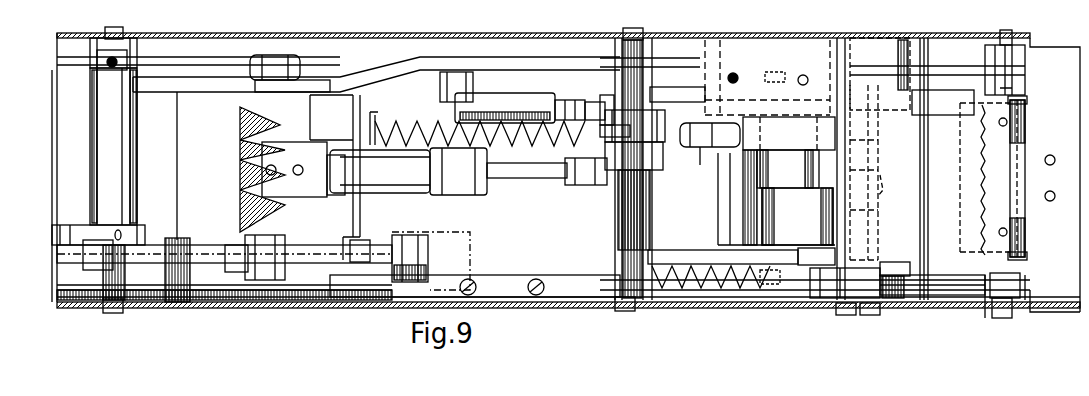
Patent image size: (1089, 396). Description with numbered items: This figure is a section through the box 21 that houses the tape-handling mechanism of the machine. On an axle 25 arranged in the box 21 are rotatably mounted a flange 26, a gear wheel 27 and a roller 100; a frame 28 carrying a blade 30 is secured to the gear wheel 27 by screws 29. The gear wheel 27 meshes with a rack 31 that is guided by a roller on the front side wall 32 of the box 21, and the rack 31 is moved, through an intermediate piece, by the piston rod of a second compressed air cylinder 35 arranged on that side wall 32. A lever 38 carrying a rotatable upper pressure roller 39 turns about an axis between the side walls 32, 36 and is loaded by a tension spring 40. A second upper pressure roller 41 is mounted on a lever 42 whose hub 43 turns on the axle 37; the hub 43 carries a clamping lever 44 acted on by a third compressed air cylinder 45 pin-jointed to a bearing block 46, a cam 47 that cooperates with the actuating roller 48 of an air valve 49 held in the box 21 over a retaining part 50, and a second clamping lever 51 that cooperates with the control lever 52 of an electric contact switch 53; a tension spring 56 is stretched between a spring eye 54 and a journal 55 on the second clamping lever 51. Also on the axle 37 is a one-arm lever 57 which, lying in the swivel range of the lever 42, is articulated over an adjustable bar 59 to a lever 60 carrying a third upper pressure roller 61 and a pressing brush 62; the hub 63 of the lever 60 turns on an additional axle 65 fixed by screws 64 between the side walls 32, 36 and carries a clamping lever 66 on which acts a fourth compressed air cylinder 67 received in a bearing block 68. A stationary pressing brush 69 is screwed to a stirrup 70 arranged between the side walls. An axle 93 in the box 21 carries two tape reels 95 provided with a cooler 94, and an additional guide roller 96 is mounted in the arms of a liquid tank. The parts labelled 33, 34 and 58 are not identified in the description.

The box 21 is at (554, 27).
The axle 25 is at (833, 82).
The flange 26 is at (880, 55).
The gear wheel 27 is at (905, 290).
The frame 28 is at (946, 72).
The screws 29 is at (900, 80).
The blade 30 is at (1030, 207).
The rack 31 is at (744, 292).
The front side wall 32 is at (913, 298).
The slide block 33 is at (830, 298).
The drive housing 34 is at (432, 262).
The second compressed air cylinder 35 is at (211, 300).
The side wall 36 is at (597, 40).
The axle 37 is at (620, 300).
The lever 38 is at (795, 265).
The upper pressure roller 39 is at (797, 216).
The tension spring 40 is at (668, 290).
The second upper pressure roller 41 is at (730, 224).
The lever 42 is at (675, 90).
The hub 43 is at (660, 200).
The clamping lever 44 is at (657, 185).
The third compressed air cylinder 45 is at (412, 196).
The bearing block 46 is at (285, 168).
The cam 47 is at (657, 160).
The actuating roller 48 is at (702, 160).
The air valve 49 is at (755, 160).
The retaining part 50 is at (755, 55).
The second clamping lever 51 is at (602, 102).
The control lever 52 is at (578, 100).
The electric contact switch 53 is at (505, 97).
The spring eye 54 is at (376, 126).
The journal 55 is at (577, 165).
The tension spring 56 is at (503, 146).
The one-arm lever 57 is at (502, 60).
The support 58 is at (440, 102).
The adjustable bar 59 is at (263, 55).
The lever 60 is at (205, 77).
The third upper pressure roller 61 is at (362, 216).
The pressing brush 62 is at (238, 207).
The hub 63 is at (138, 181).
The screws 64 is at (119, 33).
The additional axle 65 is at (98, 36).
The clamping lever 66 is at (80, 230).
The fourth compressed air cylinder 67 is at (274, 280).
The bearing block 68 is at (472, 240).
The stationary pressing brush 69 is at (178, 139).
The stirrup 70 is at (132, 50).
The axle 93 is at (1010, 63).
The cooler 94 is at (1028, 102).
The tape reels 95 is at (1028, 128).
The additional guide roller 96 is at (880, 170).
The roller 100 is at (880, 198).